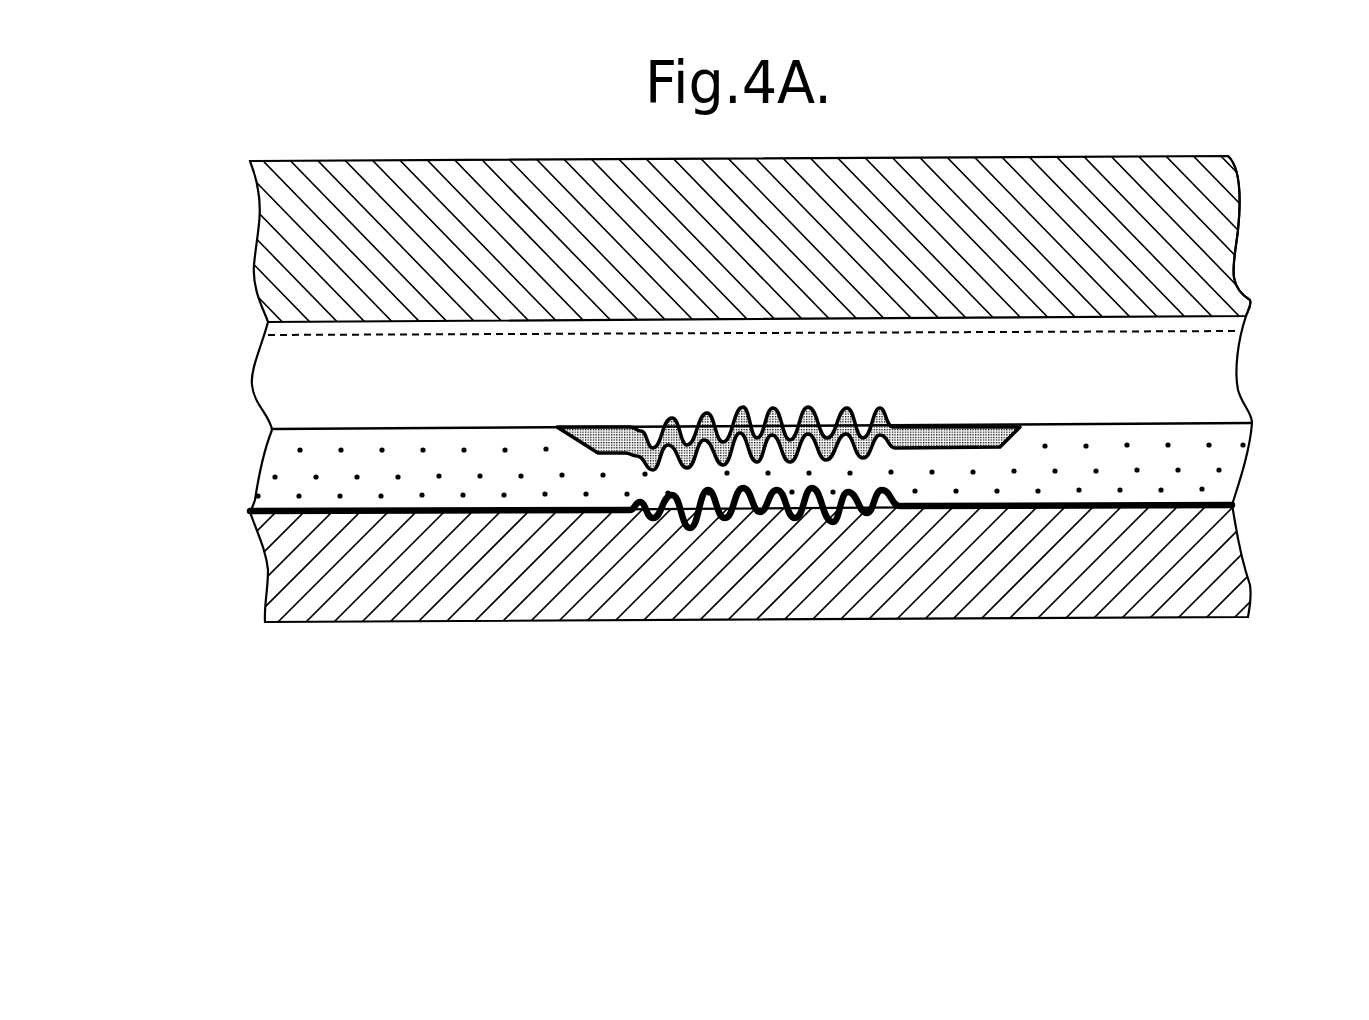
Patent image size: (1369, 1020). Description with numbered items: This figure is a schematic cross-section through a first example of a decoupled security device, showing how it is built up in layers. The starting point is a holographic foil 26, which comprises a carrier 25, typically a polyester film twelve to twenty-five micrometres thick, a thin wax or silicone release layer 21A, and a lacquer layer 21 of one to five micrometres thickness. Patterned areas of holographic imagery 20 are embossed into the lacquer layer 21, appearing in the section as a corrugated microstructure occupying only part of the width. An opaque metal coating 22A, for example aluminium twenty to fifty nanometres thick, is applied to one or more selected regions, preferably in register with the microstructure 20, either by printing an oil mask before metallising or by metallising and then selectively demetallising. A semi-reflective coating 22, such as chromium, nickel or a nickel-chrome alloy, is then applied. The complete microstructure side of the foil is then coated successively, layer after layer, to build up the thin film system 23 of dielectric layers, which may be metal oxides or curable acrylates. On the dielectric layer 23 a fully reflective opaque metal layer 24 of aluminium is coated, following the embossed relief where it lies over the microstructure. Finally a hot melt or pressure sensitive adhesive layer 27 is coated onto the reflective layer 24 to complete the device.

The holographic imagery 20 is at (886, 413).
The lacquer layer 21 is at (1112, 388).
The release layer 21A is at (265, 335).
The semi-reflective coating 22 is at (1237, 405).
The opaque metal coating 22A is at (530, 440).
The thin film system 23 is at (1232, 457).
The fully reflective opaque metal layer 24 is at (1237, 489).
The carrier 25 is at (265, 225).
The holographic foil 26 is at (1246, 170).
The adhesive layer 27 is at (1152, 597).